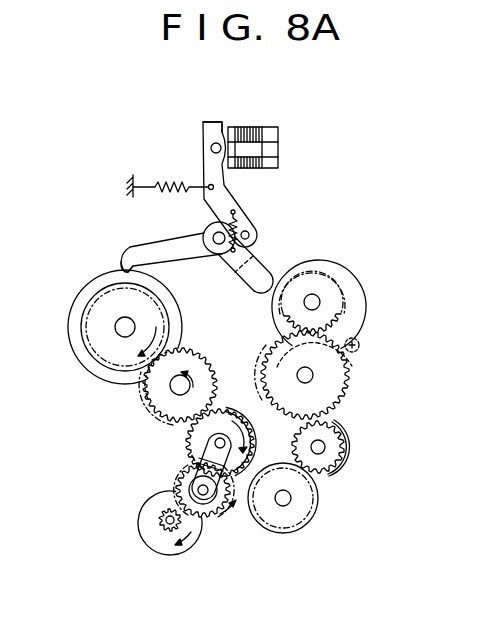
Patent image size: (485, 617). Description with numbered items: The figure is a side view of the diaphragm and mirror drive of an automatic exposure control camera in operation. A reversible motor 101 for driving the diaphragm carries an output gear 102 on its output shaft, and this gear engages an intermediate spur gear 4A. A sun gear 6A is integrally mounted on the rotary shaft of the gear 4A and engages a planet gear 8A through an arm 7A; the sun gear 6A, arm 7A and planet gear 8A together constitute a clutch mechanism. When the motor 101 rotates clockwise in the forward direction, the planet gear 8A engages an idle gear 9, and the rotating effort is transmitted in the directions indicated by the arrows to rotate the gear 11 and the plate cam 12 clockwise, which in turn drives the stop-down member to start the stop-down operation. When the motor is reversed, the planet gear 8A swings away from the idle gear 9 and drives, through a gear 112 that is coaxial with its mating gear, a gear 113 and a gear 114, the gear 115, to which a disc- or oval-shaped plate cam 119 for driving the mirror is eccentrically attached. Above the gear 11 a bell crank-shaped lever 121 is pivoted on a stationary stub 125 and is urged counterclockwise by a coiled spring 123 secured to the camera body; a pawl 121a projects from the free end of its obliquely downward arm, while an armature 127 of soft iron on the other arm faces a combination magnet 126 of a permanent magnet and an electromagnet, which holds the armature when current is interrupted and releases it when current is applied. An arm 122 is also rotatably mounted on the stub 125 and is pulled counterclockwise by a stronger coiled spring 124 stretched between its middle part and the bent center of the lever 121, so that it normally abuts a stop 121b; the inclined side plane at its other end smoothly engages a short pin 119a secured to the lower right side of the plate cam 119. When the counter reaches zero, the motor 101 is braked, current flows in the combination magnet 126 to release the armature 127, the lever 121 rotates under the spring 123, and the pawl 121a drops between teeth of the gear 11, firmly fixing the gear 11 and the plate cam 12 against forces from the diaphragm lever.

The combination magnet 126 is at (271, 110).
The coiled spring 124 is at (233, 205).
The armature 127 is at (216, 131).
The coiled spring 123 is at (175, 178).
The stationary stub 125 is at (212, 229).
The stop 121b is at (251, 231).
The bell crank-shaped lever 121 is at (147, 248).
The pawl 121a is at (120, 270).
The arm 122 is at (263, 263).
The plate cam 12 is at (83, 363).
The gear 11 is at (95, 325).
The idle gear 9 is at (185, 348).
The planet gear 8A is at (218, 407).
The arm 7A is at (200, 446).
The intermediate spur gear 4A is at (174, 489).
The sun gear 6A is at (208, 526).
The reversible motor 101 is at (150, 536).
The output gear 102 is at (157, 520).
The plate cam 119 is at (342, 273).
The gear 115 is at (330, 328).
The short pin 119a is at (357, 360).
The gear 114 is at (343, 391).
The gear 113 is at (333, 438).
The gear 112 is at (310, 485).